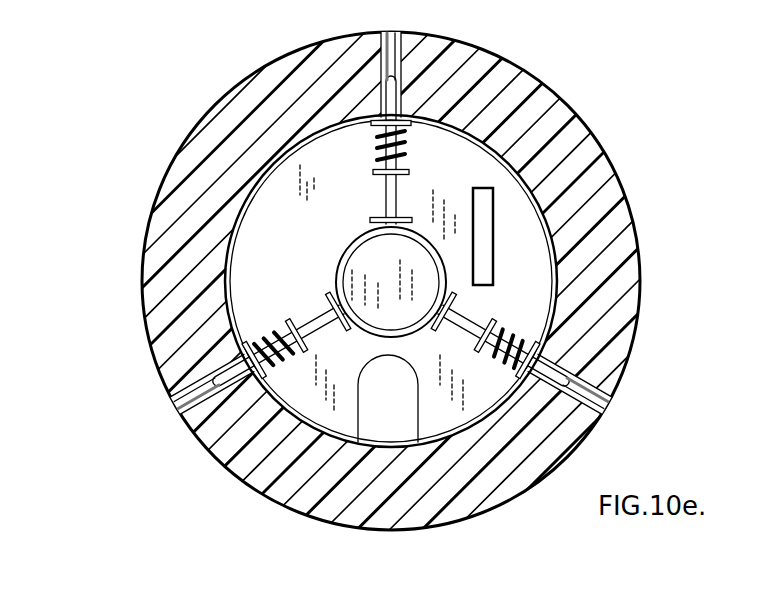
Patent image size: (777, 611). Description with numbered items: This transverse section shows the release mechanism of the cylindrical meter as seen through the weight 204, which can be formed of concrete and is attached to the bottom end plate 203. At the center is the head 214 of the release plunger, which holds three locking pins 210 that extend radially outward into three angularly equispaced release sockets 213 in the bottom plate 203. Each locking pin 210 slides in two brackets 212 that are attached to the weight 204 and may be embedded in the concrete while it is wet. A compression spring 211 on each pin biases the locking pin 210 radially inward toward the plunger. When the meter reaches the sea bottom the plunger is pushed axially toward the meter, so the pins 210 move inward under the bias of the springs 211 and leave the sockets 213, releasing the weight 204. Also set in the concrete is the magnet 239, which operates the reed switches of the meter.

The bottom end plate 203 is at (343, 503).
The weight 204 is at (458, 428).
The locking pins 210 is at (420, 76).
The compression springs 211 is at (406, 140).
The brackets 212 is at (332, 305).
The release sockets 213 is at (392, 33).
The head of the release plunger 214 is at (362, 268).
The magnet 239 is at (495, 248).